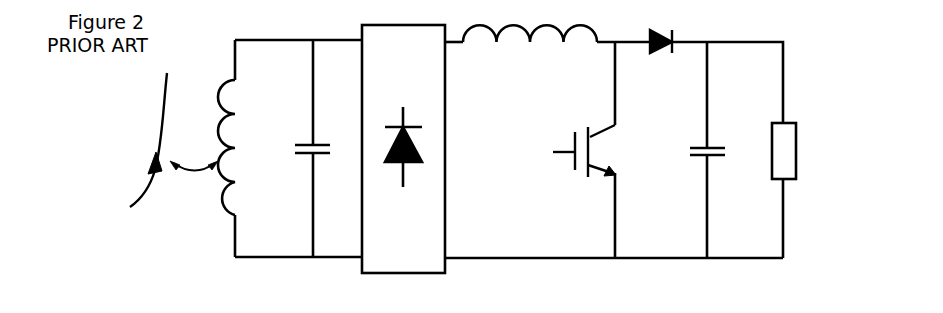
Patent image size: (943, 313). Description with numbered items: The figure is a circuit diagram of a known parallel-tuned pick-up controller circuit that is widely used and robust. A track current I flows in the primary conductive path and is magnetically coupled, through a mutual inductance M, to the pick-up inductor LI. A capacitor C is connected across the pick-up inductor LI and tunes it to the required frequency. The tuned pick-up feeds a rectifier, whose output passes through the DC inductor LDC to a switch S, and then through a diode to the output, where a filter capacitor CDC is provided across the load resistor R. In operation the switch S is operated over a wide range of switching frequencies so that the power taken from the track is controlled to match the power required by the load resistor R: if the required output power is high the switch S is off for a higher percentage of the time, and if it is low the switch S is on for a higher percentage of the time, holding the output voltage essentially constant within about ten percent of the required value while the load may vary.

The primary current I is at (148, 140).
The mutual inductance M is at (194, 156).
The pick-up inductor LI is at (240, 147).
The capacitor C is at (324, 155).
The DC inductor LDC is at (530, 52).
The switch S is at (584, 153).
The filter capacitor CDC is at (686, 156).
The load resistor R is at (792, 151).